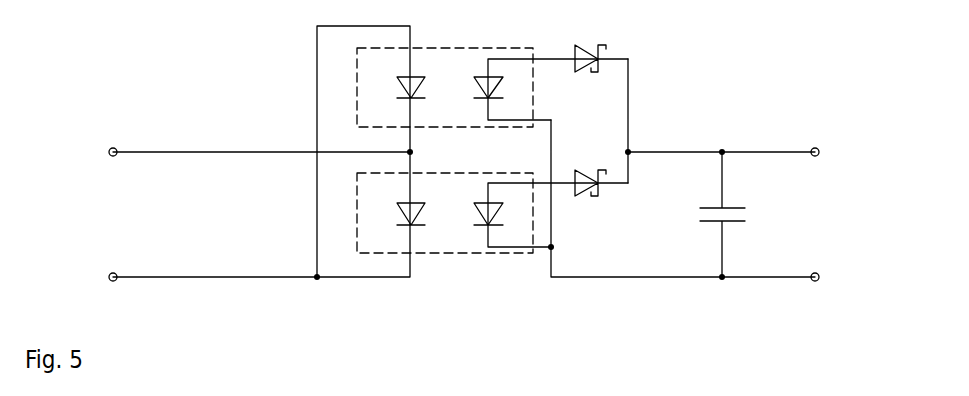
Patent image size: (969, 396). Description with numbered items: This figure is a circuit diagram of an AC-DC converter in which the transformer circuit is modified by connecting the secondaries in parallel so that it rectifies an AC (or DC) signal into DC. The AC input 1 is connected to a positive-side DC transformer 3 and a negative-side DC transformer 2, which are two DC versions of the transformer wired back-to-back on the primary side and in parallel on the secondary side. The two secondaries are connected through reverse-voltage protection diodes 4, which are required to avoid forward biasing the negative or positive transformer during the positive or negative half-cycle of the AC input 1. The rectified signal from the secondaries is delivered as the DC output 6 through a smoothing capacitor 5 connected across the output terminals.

The AC input 1 is at (140, 214).
The negative-side DC transformer 2 is at (492, 87).
The positive-side DC transformer 3 is at (492, 213).
The reverse-voltage protection diodes 4 is at (590, 120).
The smoothing capacitor 5 is at (708, 214).
The DC output 6 is at (824, 214).